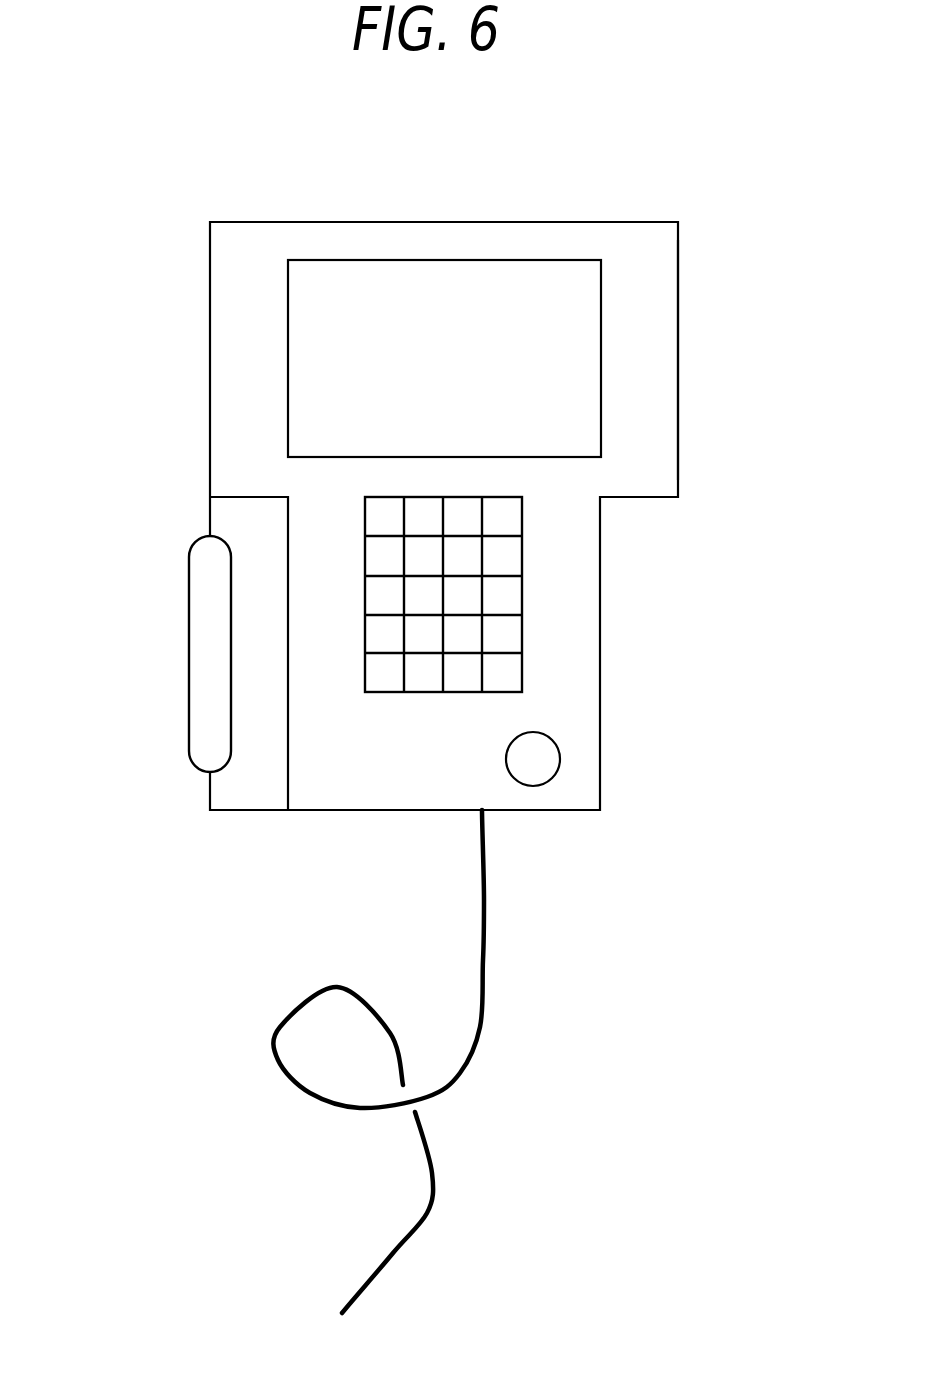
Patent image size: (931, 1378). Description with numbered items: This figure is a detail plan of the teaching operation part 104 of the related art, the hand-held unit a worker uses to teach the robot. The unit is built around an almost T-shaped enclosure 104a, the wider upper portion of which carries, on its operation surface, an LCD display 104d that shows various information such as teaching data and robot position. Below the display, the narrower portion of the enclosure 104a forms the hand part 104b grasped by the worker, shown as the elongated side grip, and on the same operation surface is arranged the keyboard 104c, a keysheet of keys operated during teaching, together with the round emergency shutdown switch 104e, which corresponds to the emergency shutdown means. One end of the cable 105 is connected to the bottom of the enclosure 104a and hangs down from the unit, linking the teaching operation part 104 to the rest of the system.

The teaching operation part 104 is at (166, 358).
The enclosure 104a is at (660, 357).
The hand part 104b is at (189, 650).
The keyboard 104c is at (512, 595).
The LCD display 104d is at (445, 262).
The emergency shutdown switch 104e is at (560, 758).
The cable 105 is at (485, 980).